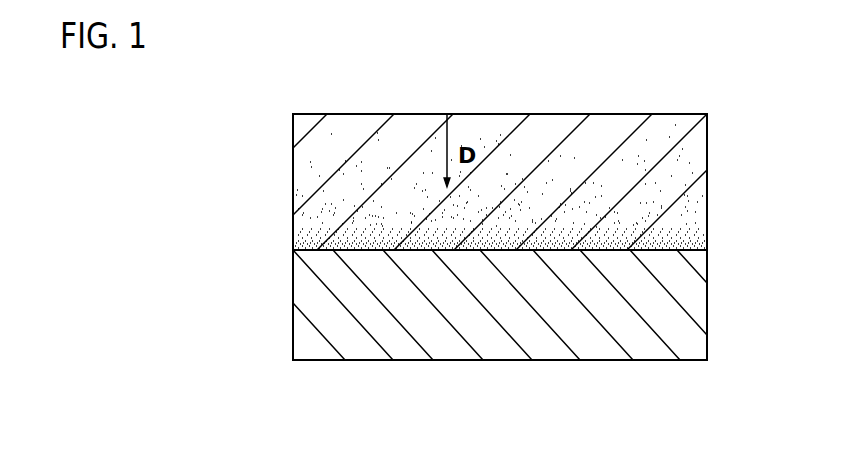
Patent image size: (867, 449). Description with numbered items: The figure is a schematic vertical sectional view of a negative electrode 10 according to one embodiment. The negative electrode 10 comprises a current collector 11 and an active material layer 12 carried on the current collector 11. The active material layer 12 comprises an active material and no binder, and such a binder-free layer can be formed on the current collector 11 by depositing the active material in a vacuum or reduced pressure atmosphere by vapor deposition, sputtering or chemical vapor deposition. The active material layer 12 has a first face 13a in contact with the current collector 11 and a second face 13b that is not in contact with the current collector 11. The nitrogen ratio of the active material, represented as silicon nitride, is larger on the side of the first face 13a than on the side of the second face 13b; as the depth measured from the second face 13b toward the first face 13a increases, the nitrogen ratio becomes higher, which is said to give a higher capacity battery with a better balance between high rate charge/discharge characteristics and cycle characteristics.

The negative electrode 10 is at (606, 93).
The current collector 11 is at (683, 313).
The active material layer 12 is at (687, 178).
The first face 13a is at (316, 249).
The second face 13b is at (325, 113).